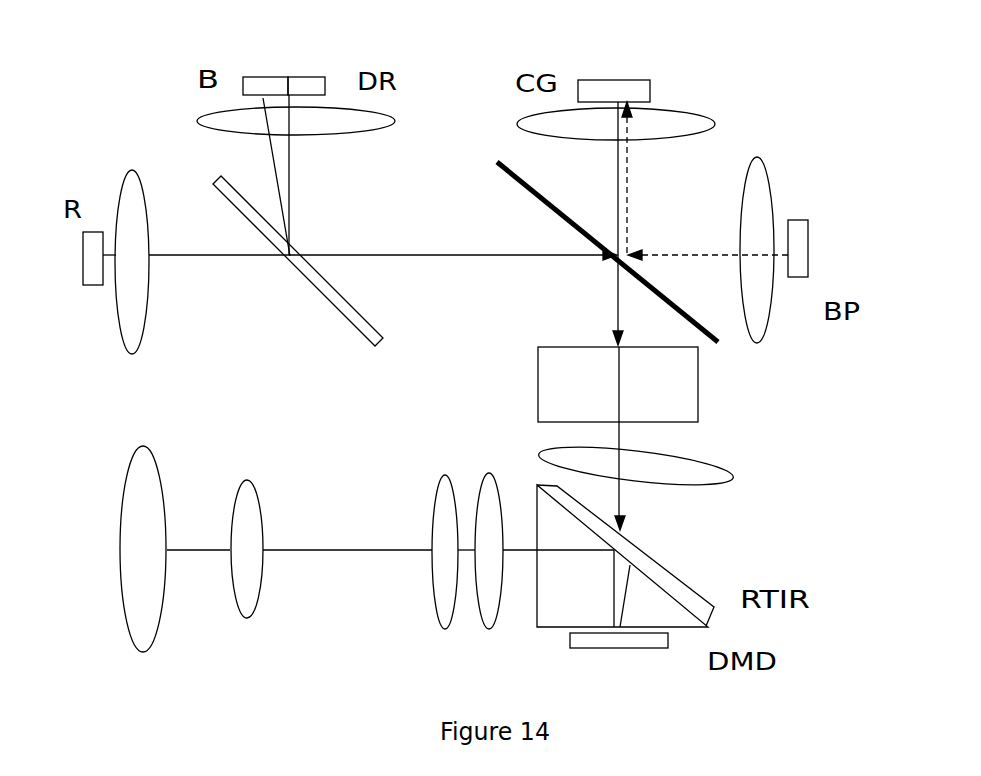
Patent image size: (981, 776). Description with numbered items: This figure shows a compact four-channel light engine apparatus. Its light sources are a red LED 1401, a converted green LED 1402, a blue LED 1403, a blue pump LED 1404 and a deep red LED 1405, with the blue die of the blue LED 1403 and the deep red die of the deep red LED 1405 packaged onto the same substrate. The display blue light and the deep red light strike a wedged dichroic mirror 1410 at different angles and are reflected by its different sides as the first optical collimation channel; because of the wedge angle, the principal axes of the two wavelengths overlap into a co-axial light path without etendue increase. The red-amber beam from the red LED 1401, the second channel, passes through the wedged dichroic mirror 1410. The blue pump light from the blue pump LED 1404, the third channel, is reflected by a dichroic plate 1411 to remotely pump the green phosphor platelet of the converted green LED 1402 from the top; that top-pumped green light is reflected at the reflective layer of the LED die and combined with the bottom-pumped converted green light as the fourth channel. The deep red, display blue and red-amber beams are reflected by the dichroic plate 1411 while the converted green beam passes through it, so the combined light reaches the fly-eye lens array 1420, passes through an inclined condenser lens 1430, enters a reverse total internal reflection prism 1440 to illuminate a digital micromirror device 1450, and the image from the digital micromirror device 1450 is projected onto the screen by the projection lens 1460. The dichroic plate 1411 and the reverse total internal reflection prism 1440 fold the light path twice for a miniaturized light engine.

The red LED 1401 is at (83, 283).
The converted green (CG) LED 1402 is at (650, 90).
The blue LED 1403 is at (260, 77).
The blue pump LED 1404 is at (808, 232).
The deep red (DR) LED 1405 is at (303, 77).
The wedged dichroic mirror 1410 is at (358, 312).
The dichroic mirror 1411 is at (542, 207).
The fly-eye lens array 1420 is at (698, 400).
The inclined condenser lens 1430 is at (733, 478).
The RTIR prism 1440 is at (713, 613).
The DMD 1450 is at (610, 652).
The projection lens 1460 is at (488, 657).